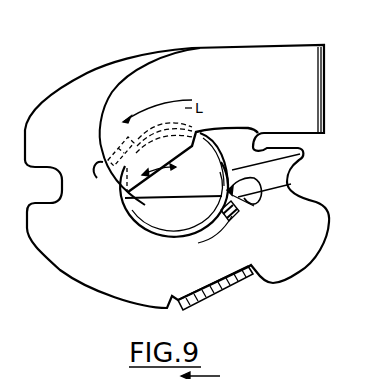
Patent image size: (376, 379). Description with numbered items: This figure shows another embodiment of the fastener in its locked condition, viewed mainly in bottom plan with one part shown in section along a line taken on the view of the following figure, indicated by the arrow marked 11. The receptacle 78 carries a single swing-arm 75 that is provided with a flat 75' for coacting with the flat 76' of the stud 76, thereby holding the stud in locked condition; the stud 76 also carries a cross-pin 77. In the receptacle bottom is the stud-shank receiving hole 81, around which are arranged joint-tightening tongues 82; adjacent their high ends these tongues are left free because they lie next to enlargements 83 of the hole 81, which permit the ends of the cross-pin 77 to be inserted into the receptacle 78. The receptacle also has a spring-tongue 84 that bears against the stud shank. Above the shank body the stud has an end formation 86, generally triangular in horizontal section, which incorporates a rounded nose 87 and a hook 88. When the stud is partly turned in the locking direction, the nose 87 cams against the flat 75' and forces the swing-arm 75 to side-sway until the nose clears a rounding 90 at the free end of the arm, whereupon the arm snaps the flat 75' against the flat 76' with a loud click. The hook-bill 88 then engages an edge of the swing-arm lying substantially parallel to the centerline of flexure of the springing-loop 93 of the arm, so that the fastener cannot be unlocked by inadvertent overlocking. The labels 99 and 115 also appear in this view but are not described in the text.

The swing-arm 75 is at (190, 113).
The flat 75' is at (193, 144).
The stud 76 is at (213, 224).
The flat 76' is at (96, 203).
The cross-pin 77 is at (235, 226).
The receptacle 78 is at (62, 274).
The stud-shank receiving hole 81 is at (302, 153).
The joint-tightening tongues 82 is at (148, 133).
The enlargements 83 is at (96, 174).
The spring-tongue 84 is at (225, 300).
The end formation 86 is at (176, 202).
The rounded nose 87 is at (135, 203).
The hook 88 is at (193, 140).
The rounding 90 is at (120, 198).
The springing-loop 93 is at (313, 90).
The housing wall 99 is at (367, 144).
The housing portion 115 is at (364, 227).
The section line 11 is at (211, 370).